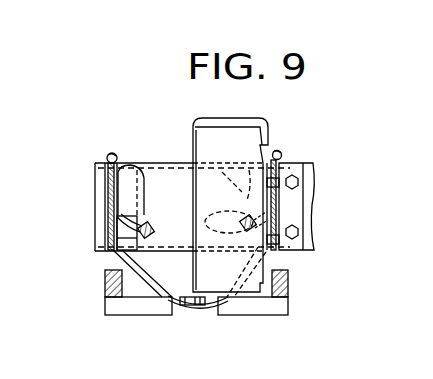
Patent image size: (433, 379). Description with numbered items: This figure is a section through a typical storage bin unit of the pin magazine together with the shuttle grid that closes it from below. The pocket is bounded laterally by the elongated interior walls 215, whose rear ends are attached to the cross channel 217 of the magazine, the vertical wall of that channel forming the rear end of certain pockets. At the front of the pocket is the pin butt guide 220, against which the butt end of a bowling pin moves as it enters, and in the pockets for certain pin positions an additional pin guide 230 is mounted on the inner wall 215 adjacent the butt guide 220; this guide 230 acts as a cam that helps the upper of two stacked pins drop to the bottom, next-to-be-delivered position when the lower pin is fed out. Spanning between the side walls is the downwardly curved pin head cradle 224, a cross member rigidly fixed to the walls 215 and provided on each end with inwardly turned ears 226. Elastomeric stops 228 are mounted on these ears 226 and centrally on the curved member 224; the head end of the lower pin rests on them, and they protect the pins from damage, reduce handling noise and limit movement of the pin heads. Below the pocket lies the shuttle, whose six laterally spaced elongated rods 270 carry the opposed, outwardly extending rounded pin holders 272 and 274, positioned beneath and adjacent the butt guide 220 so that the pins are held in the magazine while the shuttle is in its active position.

The interior wall 215 is at (106, 154).
The cross channel 217 is at (318, 200).
The pin butt guide 220 is at (214, 118).
The pin head cradle 224 is at (122, 262).
The inwardly turned ear 226 is at (117, 237).
The elastomeric stop 228 is at (151, 226).
The pin guide 230 is at (139, 186).
The elongated rod 270 is at (105, 284).
The pin holder 272 is at (289, 306).
The pin holder 274 is at (115, 306).